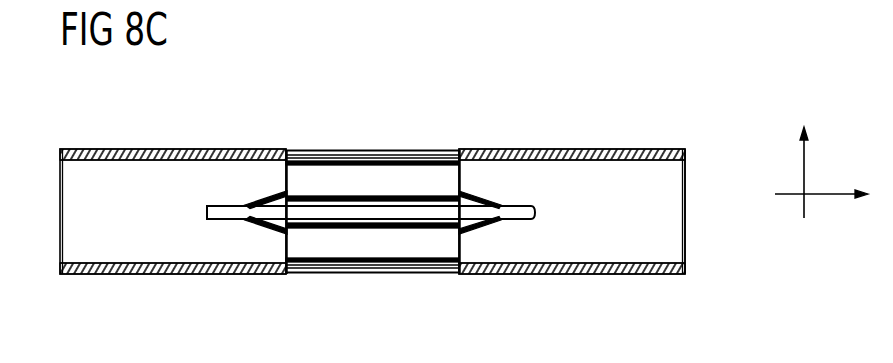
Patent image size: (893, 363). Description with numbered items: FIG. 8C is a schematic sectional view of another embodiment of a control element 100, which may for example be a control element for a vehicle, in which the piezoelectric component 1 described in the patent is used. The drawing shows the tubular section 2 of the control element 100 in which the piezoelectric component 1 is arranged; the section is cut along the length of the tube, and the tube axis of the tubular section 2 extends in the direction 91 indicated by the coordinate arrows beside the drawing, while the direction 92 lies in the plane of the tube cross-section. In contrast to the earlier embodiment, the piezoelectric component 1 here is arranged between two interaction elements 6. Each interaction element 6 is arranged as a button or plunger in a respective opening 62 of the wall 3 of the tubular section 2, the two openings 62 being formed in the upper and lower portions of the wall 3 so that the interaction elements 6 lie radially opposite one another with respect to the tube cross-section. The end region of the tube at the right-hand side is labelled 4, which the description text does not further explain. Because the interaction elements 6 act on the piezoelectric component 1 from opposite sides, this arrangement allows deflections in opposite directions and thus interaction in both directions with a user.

The control element 100 is at (530, 92).
The piezoelectric component 1 is at (536, 213).
The tubular section 2 is at (108, 172).
The wall 3 is at (595, 150).
The end wall 4 is at (672, 218).
The interaction element 6 is at (352, 237).
The opening 62 is at (273, 150).
The direction 91 is at (833, 197).
The direction 92 is at (800, 168).